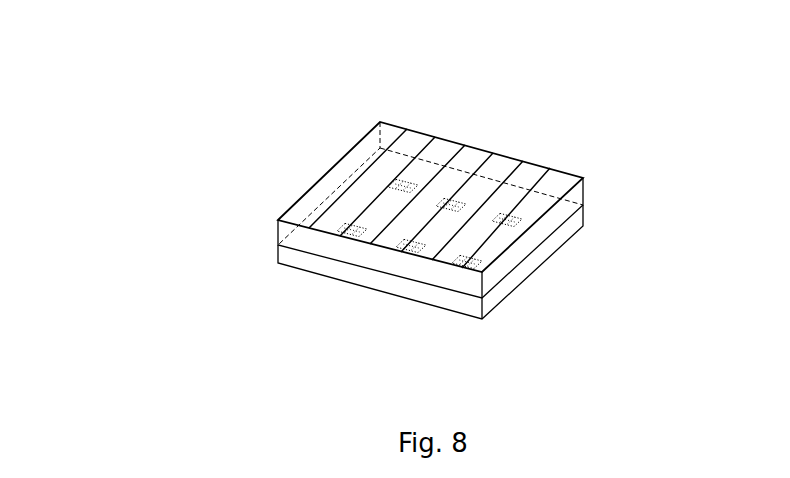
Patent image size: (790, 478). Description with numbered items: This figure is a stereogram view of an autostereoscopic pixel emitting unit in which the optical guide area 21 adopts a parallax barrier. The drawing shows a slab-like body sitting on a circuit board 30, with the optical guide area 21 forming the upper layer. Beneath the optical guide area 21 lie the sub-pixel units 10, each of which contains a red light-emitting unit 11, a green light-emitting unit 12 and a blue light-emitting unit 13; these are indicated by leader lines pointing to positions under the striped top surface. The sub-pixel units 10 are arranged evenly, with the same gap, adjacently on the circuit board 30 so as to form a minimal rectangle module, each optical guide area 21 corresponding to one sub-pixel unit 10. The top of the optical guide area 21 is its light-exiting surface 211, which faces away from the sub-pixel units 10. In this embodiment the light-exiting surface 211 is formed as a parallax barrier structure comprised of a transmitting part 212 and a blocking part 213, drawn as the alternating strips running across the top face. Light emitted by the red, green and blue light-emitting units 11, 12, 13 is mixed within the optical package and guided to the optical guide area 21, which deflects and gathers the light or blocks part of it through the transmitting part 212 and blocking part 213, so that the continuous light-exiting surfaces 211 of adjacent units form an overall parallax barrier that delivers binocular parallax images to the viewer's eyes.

The sub-pixel unit 10 is at (356, 141).
The red light-emitting unit 11 is at (392, 178).
The green light-emitting unit 12 is at (457, 181).
The blue light-emitting unit 13 is at (512, 200).
The optical guide area 21 is at (583, 180).
The light-exiting surface 211 is at (356, 149).
The transmitting part 212 is at (383, 148).
The blocking part 213 is at (328, 220).
The circuit board 30 is at (518, 288).